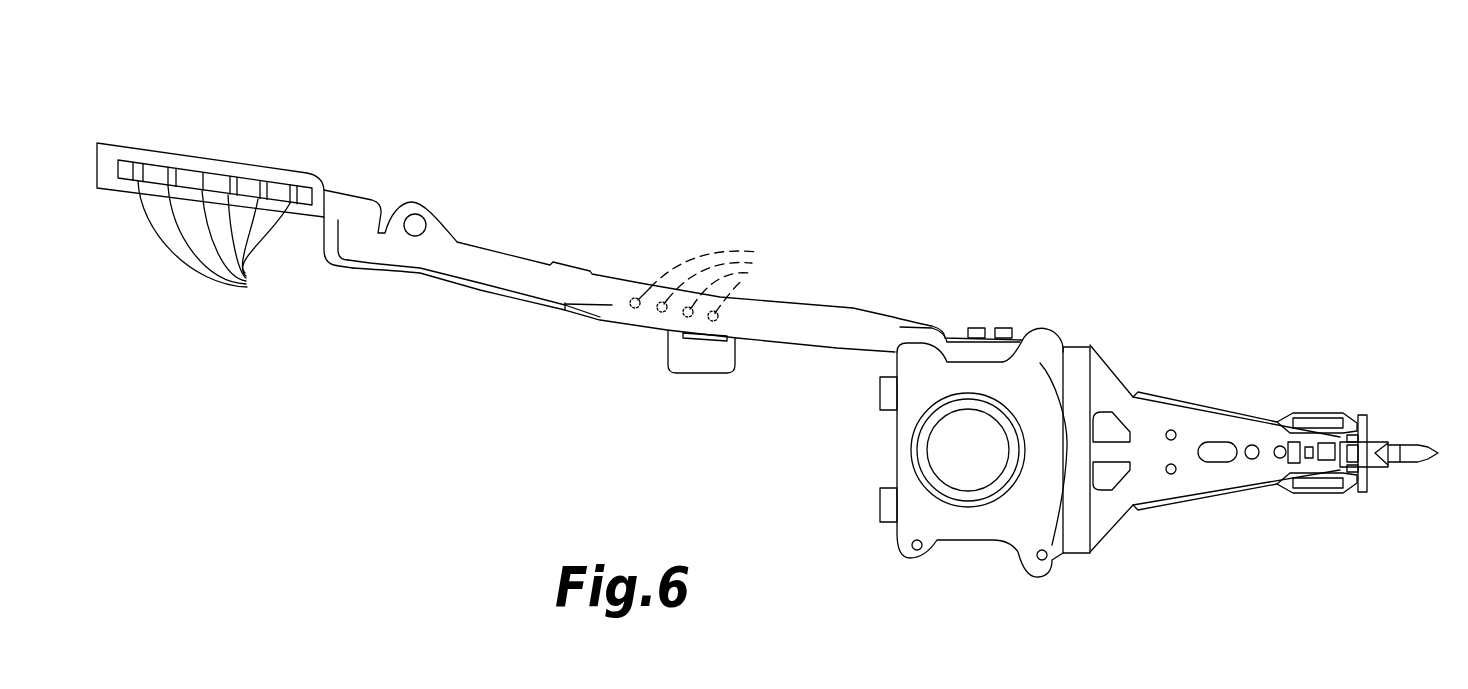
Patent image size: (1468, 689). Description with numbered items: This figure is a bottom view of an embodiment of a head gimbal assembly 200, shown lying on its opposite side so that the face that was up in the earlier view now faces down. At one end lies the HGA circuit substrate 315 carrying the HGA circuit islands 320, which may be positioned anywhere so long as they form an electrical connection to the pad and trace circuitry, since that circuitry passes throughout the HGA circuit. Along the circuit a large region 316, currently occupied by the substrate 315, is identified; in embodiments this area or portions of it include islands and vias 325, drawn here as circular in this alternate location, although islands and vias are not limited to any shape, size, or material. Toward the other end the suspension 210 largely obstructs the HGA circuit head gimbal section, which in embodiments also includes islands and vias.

The head gimbal assembly 200 is at (488, 150).
The suspension 210 is at (897, 562).
The HGA circuit substrate 315 is at (352, 248).
The large region 316 is at (612, 305).
The HGA circuit islands 320 is at (210, 221).
The islands and vias 325 is at (719, 284).